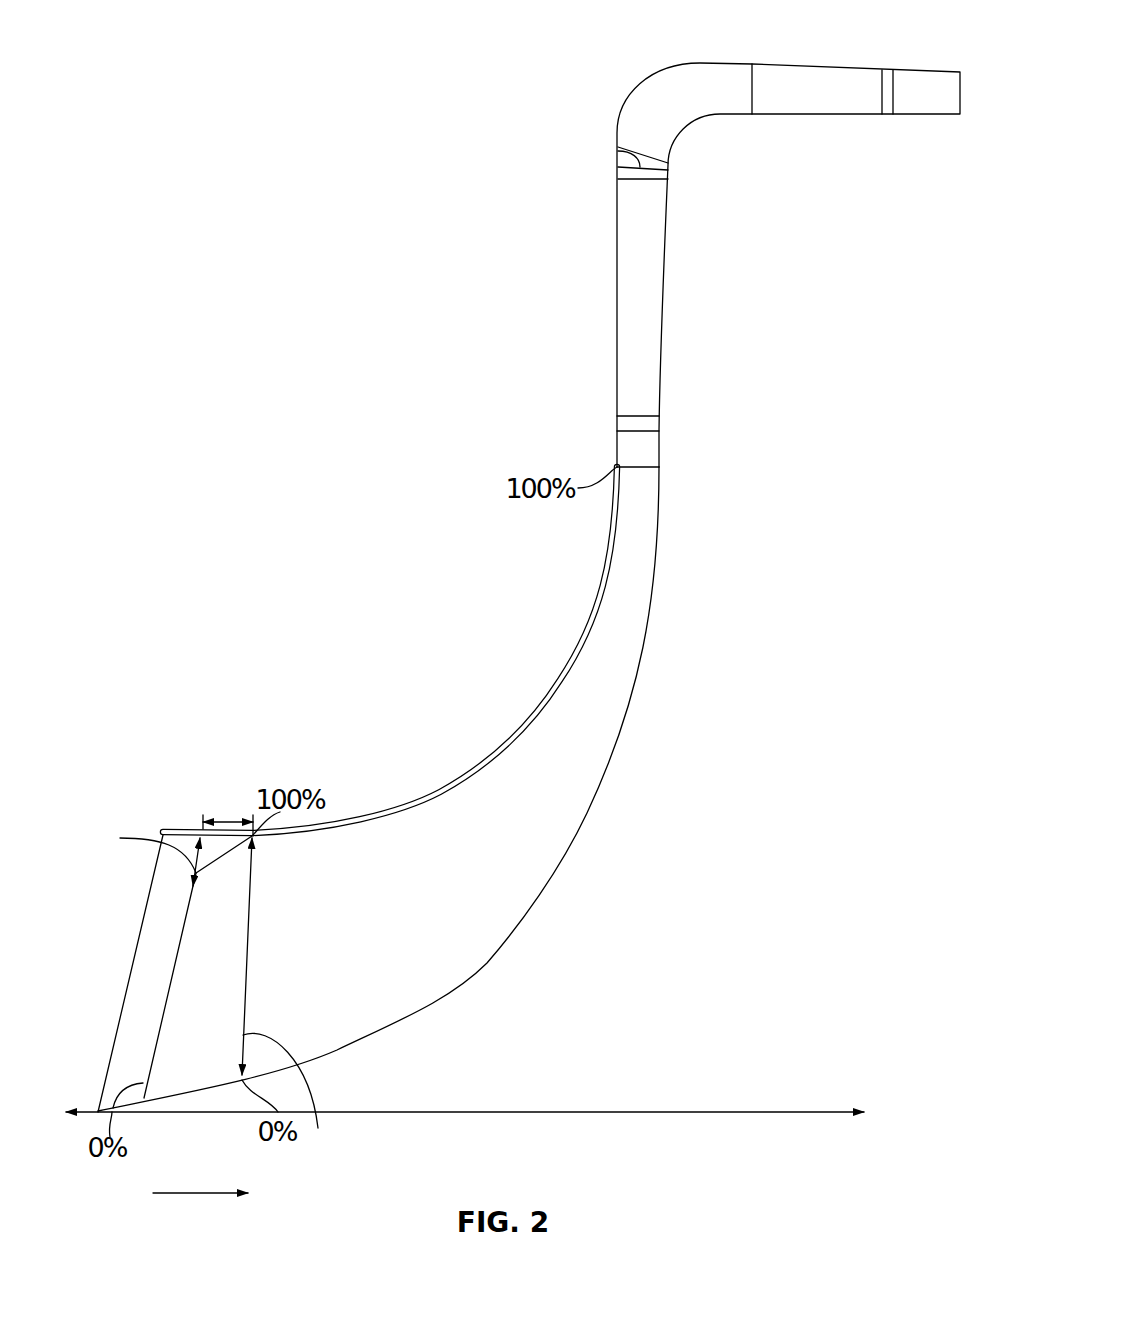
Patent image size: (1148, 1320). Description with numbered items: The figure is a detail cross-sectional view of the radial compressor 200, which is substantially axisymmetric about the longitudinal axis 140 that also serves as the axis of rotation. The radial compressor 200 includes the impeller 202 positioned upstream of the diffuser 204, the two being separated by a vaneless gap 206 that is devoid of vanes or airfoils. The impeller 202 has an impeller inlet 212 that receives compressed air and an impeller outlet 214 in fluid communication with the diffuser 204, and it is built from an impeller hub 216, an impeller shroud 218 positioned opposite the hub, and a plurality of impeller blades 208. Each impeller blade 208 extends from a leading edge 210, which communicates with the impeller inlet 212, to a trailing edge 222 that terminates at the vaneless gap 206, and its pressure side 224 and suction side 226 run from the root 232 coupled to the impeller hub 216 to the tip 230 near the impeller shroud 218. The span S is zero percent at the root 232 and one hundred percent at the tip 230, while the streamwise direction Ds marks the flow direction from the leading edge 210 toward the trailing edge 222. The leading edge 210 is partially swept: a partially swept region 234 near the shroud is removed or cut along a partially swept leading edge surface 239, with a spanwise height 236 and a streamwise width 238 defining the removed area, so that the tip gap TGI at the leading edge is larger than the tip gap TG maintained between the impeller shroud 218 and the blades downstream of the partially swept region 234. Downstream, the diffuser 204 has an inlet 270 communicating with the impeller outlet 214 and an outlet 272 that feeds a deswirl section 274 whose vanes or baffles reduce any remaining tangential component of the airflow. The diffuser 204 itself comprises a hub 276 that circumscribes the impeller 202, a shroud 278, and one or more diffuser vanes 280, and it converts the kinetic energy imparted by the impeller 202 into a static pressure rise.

The longitudinal axis 140 is at (793, 1111).
The radial compressor 200 is at (318, 345).
The impeller 202 is at (306, 710).
The diffuser 204 is at (596, 265).
The vaneless gap 206 is at (606, 454).
The impeller blade 208 is at (476, 893).
The leading edge 210 is at (153, 1043).
The impeller inlet 212 is at (127, 975).
The impeller outlet 214 is at (644, 431).
The impeller hub 216 is at (200, 1090).
The impeller shroud 218 is at (352, 822).
The trailing edge 222 is at (644, 467).
The pressure side 224 is at (377, 1003).
The suction side 226 is at (467, 808).
The tip 230 is at (500, 745).
The root 232 is at (335, 1047).
The partially swept region 234 is at (156, 827).
The spanwise height 236 is at (134, 846).
The streamwise width 238 is at (227, 818).
The partially swept leading edge surface 239 is at (178, 832).
The inlet 270 is at (640, 431).
The outlet 272 is at (618, 150).
The deswirl section 274 is at (812, 65).
The hub 276 is at (665, 300).
The shroud 278 is at (617, 318).
The diffuser vane 280 is at (650, 255).
The tip gap TG is at (376, 808).
The tip gap at the leading edge TGI is at (192, 874).
The span S is at (287, 1099).
The streamwise direction Ds is at (187, 1190).